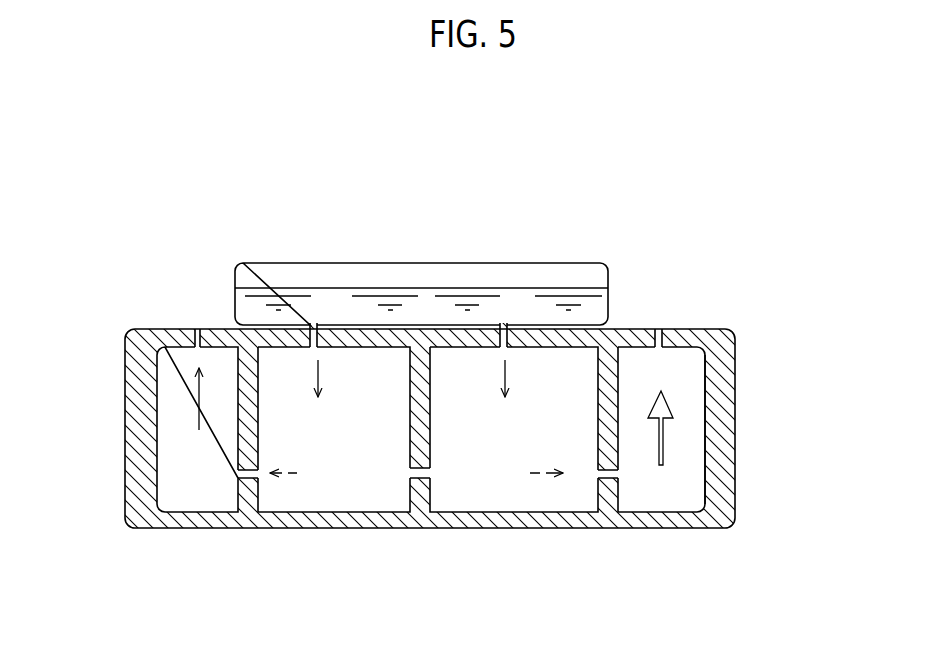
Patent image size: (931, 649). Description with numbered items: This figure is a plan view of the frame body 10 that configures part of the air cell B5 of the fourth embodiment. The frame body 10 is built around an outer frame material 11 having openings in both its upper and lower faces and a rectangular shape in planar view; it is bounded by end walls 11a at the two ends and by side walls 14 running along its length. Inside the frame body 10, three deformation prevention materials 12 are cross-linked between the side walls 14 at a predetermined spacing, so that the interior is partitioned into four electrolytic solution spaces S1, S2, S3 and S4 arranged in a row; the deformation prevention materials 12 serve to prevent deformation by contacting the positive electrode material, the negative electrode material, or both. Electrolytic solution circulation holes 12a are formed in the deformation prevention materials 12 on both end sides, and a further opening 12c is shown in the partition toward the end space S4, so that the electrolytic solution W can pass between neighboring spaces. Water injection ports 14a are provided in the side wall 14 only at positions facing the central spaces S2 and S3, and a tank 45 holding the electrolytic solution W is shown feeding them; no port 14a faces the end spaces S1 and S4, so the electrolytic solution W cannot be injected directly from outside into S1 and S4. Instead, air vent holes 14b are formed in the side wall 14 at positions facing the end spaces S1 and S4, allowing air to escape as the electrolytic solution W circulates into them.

The air cell B5 is at (122, 327).
The frame body 10 is at (126, 528).
The outer frame material 11 is at (731, 527).
The end wall 11a is at (735, 463).
The deformation prevention material 12 is at (226, 328).
The electrolytic solution circulation hole 12a is at (253, 480).
The opening in partition wall 12c is at (611, 478).
The side wall 14 is at (636, 338).
The water injection port 14a is at (313, 326).
The air vent hole 14b is at (181, 330).
The water tank 45 is at (238, 266).
The electrolytic solution W is at (279, 296).
The electrolytic solution space S1 is at (213, 497).
The electrolytic solution space S2 is at (357, 497).
The electrolytic solution space S3 is at (508, 497).
The electrolytic solution space S4 is at (673, 497).